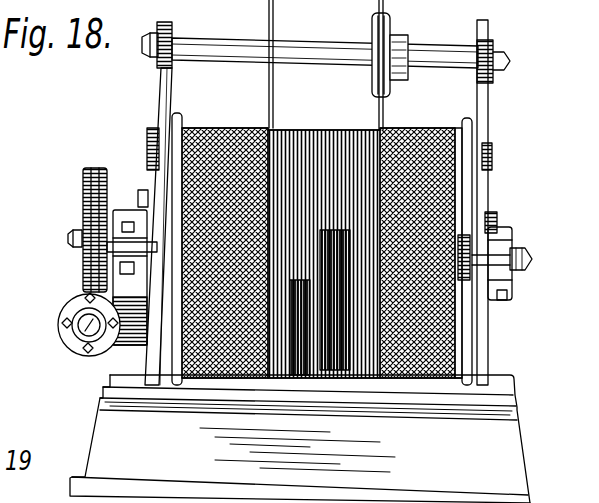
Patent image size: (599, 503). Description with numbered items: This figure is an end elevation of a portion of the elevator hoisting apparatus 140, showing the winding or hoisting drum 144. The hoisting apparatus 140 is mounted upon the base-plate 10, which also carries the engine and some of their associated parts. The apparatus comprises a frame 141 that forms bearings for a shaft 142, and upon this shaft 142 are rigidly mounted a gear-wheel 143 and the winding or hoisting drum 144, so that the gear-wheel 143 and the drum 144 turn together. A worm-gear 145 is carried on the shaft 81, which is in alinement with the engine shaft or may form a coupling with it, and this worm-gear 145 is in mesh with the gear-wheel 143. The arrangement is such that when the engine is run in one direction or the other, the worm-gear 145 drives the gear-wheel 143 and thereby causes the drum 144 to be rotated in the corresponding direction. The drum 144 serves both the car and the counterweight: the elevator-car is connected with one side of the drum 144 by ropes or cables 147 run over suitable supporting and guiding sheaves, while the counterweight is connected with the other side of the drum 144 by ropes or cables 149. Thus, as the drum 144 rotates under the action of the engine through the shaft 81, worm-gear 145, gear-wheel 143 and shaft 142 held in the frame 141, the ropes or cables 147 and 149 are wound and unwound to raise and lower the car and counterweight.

The base-plate 10 is at (503, 440).
The shaft 81 is at (88, 350).
The elevator hoisting apparatus 140 is at (161, 100).
The frame 141 is at (481, 203).
The shaft 142 is at (76, 248).
The gear-wheel 143 is at (86, 192).
The winding or hoisting drum 144 is at (317, 130).
The worm-gear 145 is at (80, 313).
The ropes or cables 147 is at (382, 118).
The ropes or cables 149 is at (268, 85).